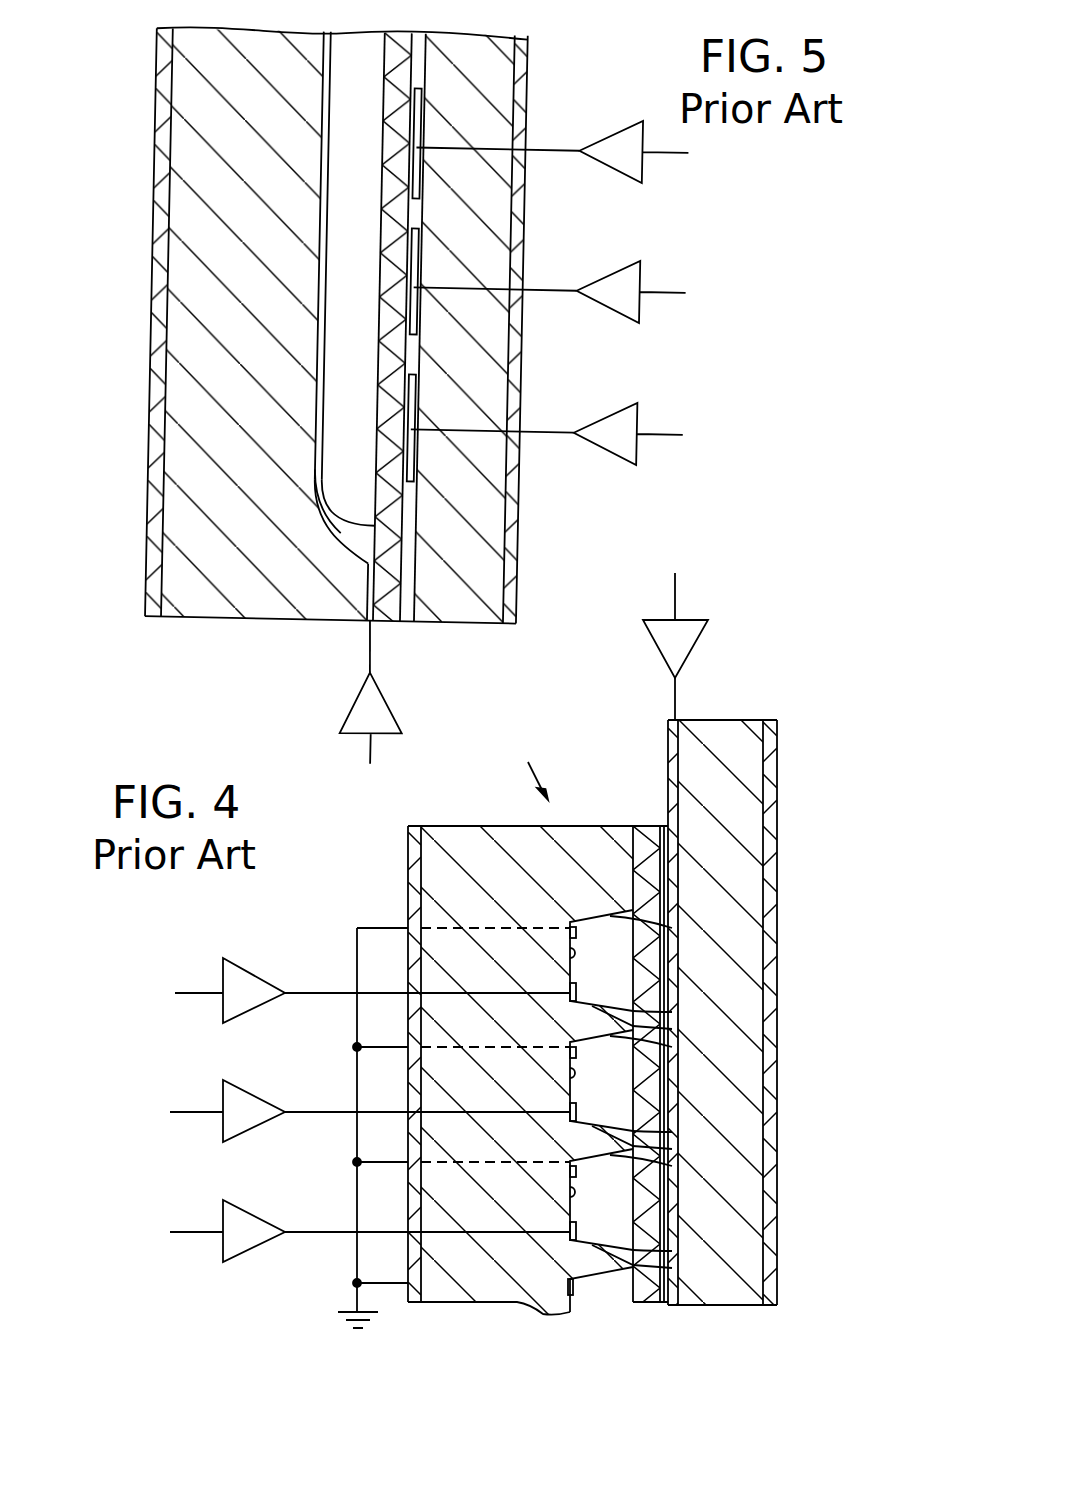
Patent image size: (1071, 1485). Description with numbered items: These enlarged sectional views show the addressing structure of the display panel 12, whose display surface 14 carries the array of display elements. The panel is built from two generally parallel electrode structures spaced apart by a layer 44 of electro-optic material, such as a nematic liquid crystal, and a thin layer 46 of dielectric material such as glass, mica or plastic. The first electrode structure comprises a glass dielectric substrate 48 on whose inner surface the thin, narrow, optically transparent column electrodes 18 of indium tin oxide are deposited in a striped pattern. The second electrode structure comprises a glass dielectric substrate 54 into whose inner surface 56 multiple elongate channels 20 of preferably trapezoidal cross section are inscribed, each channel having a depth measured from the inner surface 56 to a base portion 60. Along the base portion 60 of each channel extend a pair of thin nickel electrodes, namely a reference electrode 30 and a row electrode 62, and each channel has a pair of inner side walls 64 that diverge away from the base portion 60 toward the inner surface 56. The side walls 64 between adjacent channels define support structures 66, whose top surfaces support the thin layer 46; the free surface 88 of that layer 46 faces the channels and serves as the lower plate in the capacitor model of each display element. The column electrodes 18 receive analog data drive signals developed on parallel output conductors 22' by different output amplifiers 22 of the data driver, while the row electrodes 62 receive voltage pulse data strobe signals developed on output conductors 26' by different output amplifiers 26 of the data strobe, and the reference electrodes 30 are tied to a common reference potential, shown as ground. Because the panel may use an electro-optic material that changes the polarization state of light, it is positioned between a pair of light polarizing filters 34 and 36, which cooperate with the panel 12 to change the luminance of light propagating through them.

In FIG. 4, the display panel 12 is at (528, 766).
In FIG. 5, the display surface 14 is at (524, 528).
In FIG. 4, the display surface 14 is at (778, 820).
In FIG. 5, the column electrodes 18 is at (412, 92).
In FIG. 4, the column electrodes 18 is at (668, 757).
In FIG. 5, the channels 20 is at (338, 314).
In FIG. 4, the channels 20 is at (596, 979).
In FIG. 5, the output amplifiers 22 is at (631, 267).
In FIG. 4, the output amplifiers 22 is at (711, 625).
In FIG. 5, the output conductors 22' is at (504, 291).
In FIG. 4, the output conductors 22' is at (635, 697).
In FIG. 5, the output amplifiers 26 is at (346, 714).
In FIG. 4, the output amplifiers 26 is at (227, 1095).
In FIG. 5, the output conductors 26' is at (331, 646).
In FIG. 4, the output conductors 26' is at (427, 1080).
In FIG. 5, the reference electrode 30 is at (331, 502).
In FIG. 4, the reference electrode 30 is at (577, 929).
In FIG. 5, the light polarizing filter 34 is at (149, 461).
In FIG. 4, the light polarizing filter 34 is at (408, 855).
In FIG. 4, the light polarizing filter 36 is at (772, 718).
In FIG. 5, the layer of electro-optic material 44 is at (416, 622).
In FIG. 4, the layer of electro-optic material 44 is at (660, 827).
In FIG. 5, the thin layer of dielectric material 46 is at (393, 624).
In FIG. 4, the thin layer of dielectric material 46 is at (645, 827).
In FIG. 5, the glass dielectric substrate 48 is at (465, 49).
In FIG. 4, the glass dielectric substrate 48 is at (720, 737).
In FIG. 5, the glass dielectric substrate 54 is at (219, 610).
In FIG. 4, the glass dielectric substrate 54 is at (430, 882).
In FIG. 5, the inner surface 56 is at (372, 588).
In FIG. 5, the base portion 60 is at (328, 108).
In FIG. 4, the base portion 60 is at (569, 957).
In FIG. 4, the row electrodes 62 is at (568, 995).
In FIG. 4, the inner side walls 64 is at (672, 928).
In FIG. 4, the support structures 66 is at (612, 1027).
In FIG. 5, the free surface 88 is at (379, 524).